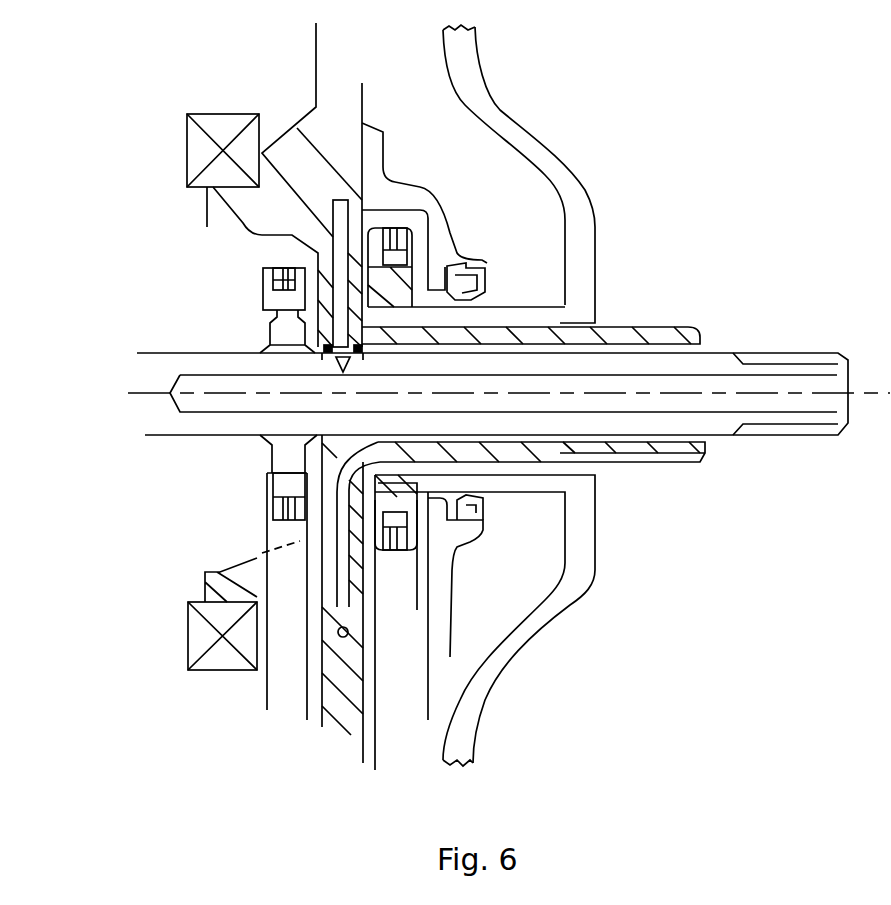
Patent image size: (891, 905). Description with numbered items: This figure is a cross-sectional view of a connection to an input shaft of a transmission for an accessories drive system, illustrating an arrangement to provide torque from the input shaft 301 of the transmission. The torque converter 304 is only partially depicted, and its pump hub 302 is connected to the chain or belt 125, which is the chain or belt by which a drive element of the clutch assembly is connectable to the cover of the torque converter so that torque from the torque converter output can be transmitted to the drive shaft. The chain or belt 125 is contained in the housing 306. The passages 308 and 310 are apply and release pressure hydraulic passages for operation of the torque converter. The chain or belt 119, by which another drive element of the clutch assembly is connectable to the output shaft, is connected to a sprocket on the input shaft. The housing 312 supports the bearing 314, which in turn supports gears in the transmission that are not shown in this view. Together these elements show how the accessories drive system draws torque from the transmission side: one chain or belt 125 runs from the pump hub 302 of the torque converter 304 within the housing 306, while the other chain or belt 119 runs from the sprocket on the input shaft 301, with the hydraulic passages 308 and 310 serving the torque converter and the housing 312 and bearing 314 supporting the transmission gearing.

The input shaft 301 is at (780, 352).
The pump hub 302 is at (524, 314).
The torque converter 304 is at (443, 52).
The housing 306 is at (383, 193).
The passage 308 is at (342, 277).
The passage 310 is at (347, 470).
The housing 312 is at (258, 560).
The bearing 314 is at (200, 637).
The chain or belt 119 is at (285, 695).
The chain or belt 125 is at (385, 703).